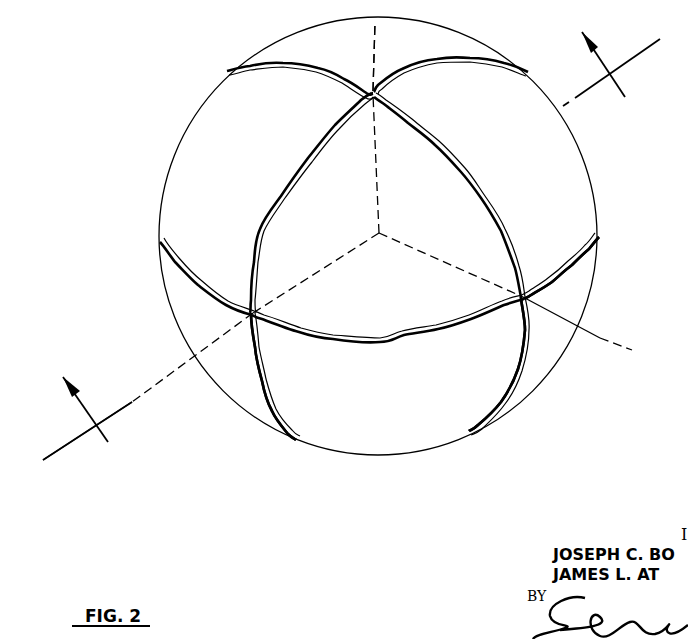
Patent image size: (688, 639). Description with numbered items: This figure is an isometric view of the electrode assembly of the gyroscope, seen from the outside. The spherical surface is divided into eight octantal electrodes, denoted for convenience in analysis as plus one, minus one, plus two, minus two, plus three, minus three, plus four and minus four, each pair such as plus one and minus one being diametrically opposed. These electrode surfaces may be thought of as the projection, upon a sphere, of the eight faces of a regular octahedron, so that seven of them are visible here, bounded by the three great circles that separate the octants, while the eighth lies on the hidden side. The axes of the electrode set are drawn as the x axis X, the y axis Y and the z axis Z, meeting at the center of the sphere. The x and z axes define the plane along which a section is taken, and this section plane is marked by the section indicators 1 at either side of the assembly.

The section line 1 is at (643, 119).
The x axis X is at (146, 395).
The y axis Y is at (635, 365).
The z axis Z is at (386, 12).